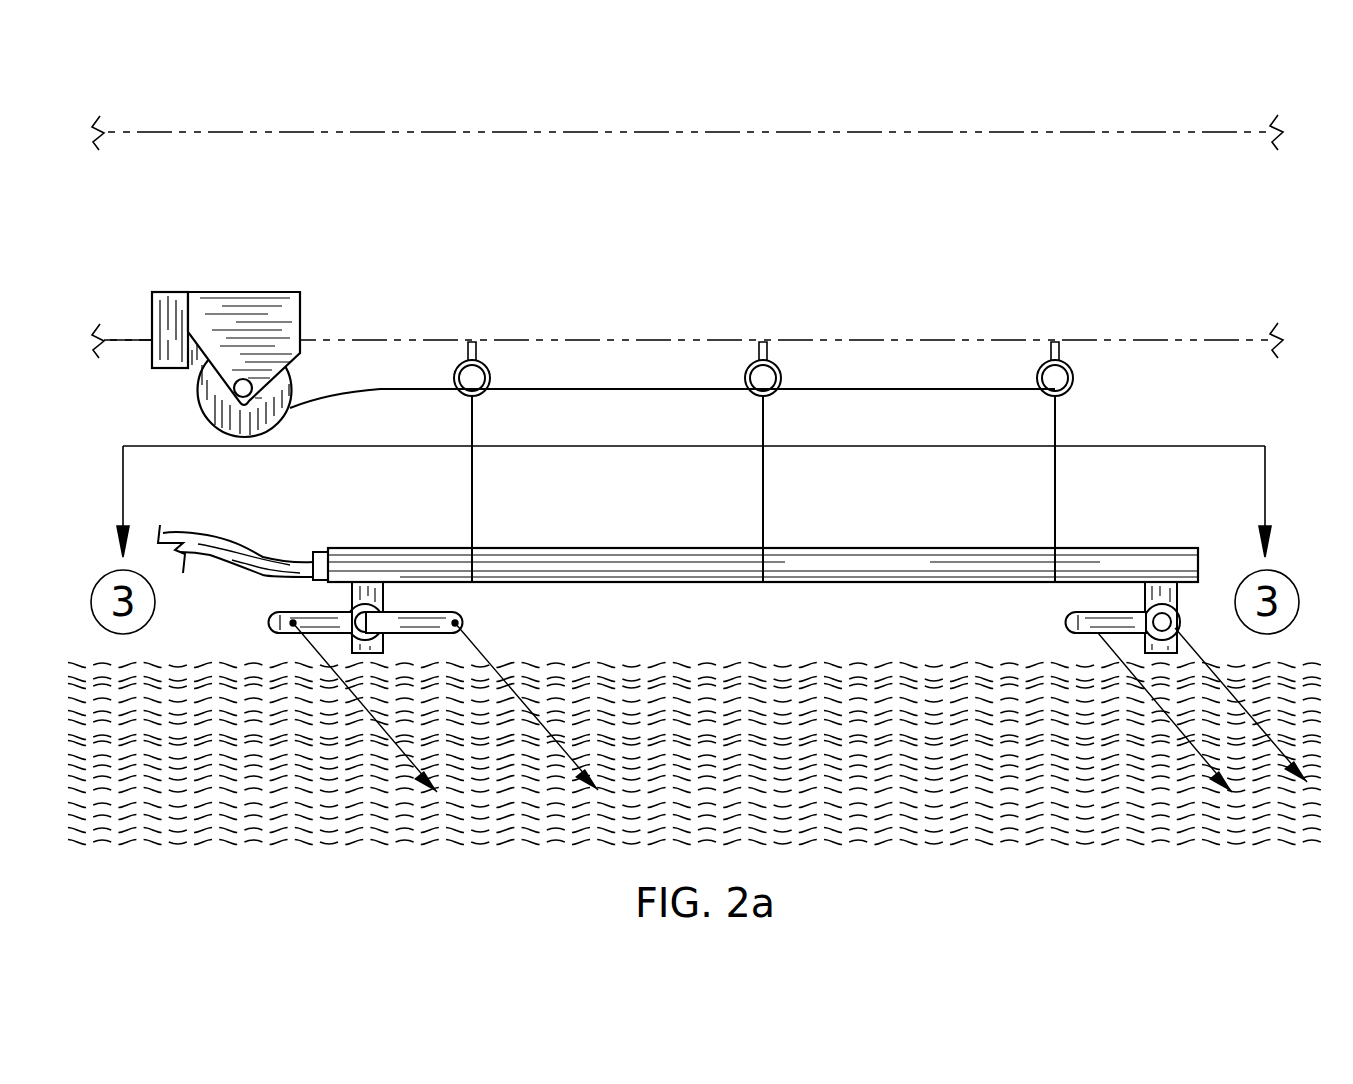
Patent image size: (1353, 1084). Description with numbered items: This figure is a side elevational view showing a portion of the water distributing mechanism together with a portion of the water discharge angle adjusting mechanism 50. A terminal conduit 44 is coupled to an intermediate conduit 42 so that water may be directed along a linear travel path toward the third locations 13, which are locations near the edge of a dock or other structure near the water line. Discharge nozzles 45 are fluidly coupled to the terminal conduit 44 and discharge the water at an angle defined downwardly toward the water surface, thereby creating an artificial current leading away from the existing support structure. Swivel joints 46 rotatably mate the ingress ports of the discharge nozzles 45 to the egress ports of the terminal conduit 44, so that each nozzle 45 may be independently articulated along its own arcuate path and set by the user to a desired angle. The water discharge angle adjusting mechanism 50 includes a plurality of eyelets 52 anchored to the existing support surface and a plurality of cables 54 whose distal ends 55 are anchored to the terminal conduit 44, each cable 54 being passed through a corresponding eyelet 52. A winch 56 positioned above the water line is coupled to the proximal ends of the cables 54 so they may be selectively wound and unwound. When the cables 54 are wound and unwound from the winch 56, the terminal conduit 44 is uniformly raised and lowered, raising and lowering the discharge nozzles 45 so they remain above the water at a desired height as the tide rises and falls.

The water discharge angle adjusting mechanism 50 is at (356, 242).
The winch 56 is at (290, 310).
The eyelets 52 is at (478, 352).
The cables 54 is at (474, 530).
The terminal conduits 44 is at (582, 568).
The distal ends 55 is at (322, 549).
The intermediate conduits 42 is at (213, 545).
The swivel joints 46 is at (386, 603).
The discharge nozzles 45 is at (312, 613).
The third locations 13 is at (655, 657).